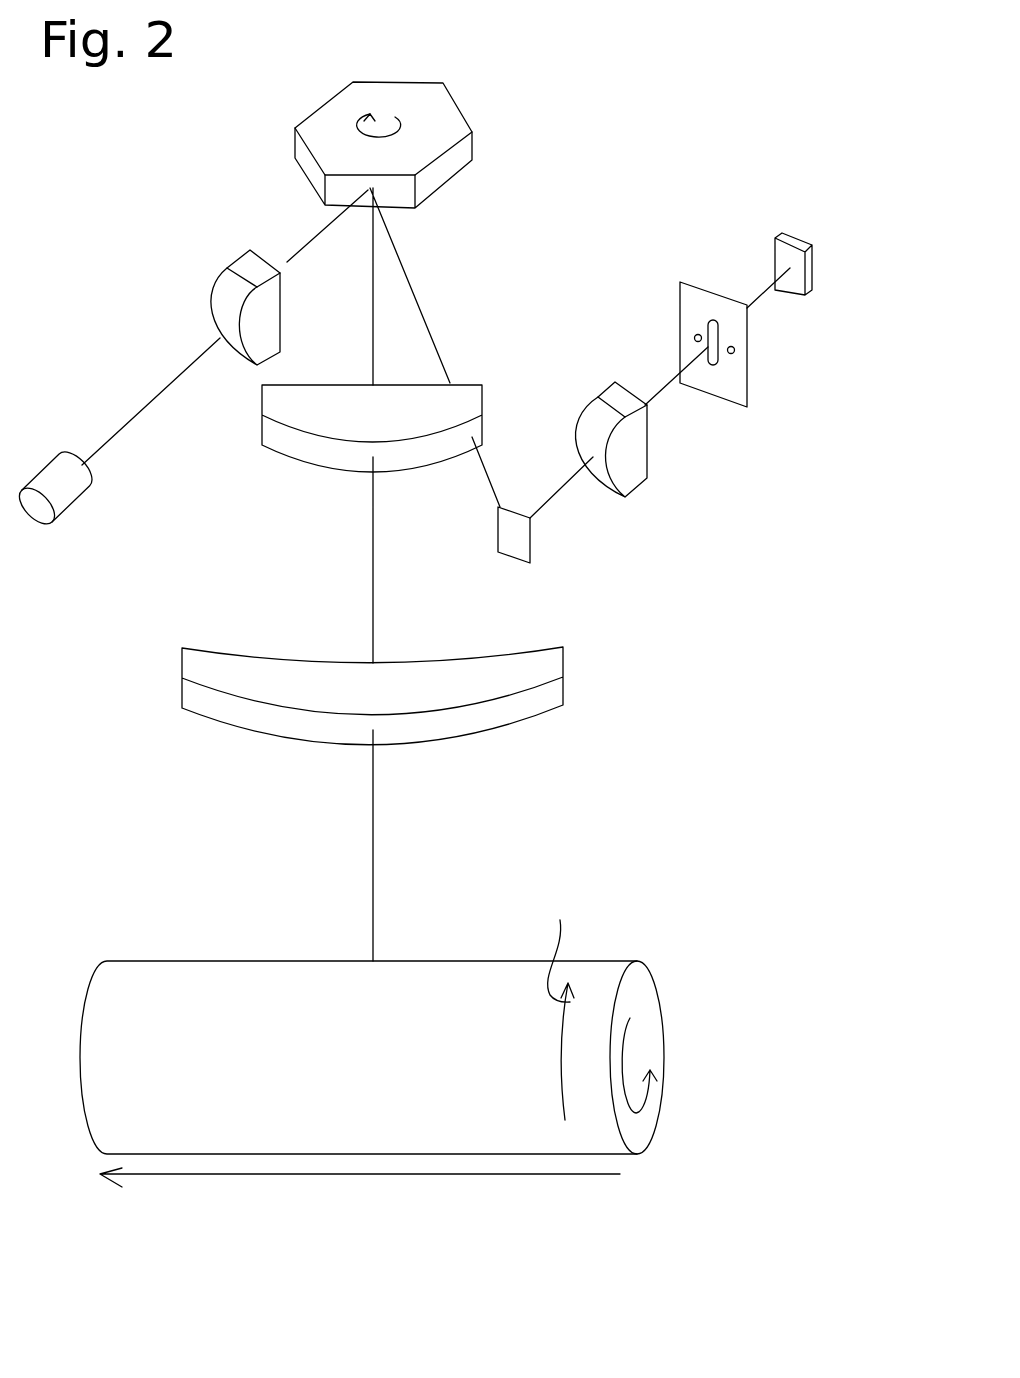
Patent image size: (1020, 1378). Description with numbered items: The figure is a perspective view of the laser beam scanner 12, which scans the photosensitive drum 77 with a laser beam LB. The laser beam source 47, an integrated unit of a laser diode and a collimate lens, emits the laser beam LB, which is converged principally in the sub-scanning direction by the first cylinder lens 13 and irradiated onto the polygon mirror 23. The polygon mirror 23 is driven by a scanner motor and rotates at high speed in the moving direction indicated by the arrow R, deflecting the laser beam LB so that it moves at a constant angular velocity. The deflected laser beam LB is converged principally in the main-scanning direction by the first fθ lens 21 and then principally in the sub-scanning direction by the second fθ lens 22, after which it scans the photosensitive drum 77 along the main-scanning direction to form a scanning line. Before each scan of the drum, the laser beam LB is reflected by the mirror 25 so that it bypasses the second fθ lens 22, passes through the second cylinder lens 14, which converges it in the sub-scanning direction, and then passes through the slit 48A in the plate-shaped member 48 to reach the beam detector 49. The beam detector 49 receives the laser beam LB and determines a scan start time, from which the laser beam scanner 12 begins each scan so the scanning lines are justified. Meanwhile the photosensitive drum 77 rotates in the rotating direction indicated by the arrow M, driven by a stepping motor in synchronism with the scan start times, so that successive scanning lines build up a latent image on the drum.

The laser beam scanner 12 is at (656, 168).
The first cylinder lens 13 is at (240, 257).
The second cylinder lens 14 is at (648, 468).
The first fθ lens 21 is at (467, 382).
The second fθ lens 22 is at (563, 680).
The polygon mirror 23 is at (420, 145).
The mirror 25 is at (530, 548).
The laser beam source 47 is at (70, 508).
The plate-shaped member 48 is at (728, 320).
The slit 48A is at (720, 358).
The beam detector 49 is at (787, 233).
The photosensitive drum 77 is at (387, 1053).
The laser beam LB is at (152, 397).
The arrow indicating moving direction of polygon mirror R is at (397, 120).
The arrow indicating rotating direction of photosensitive drum M is at (658, 1065).